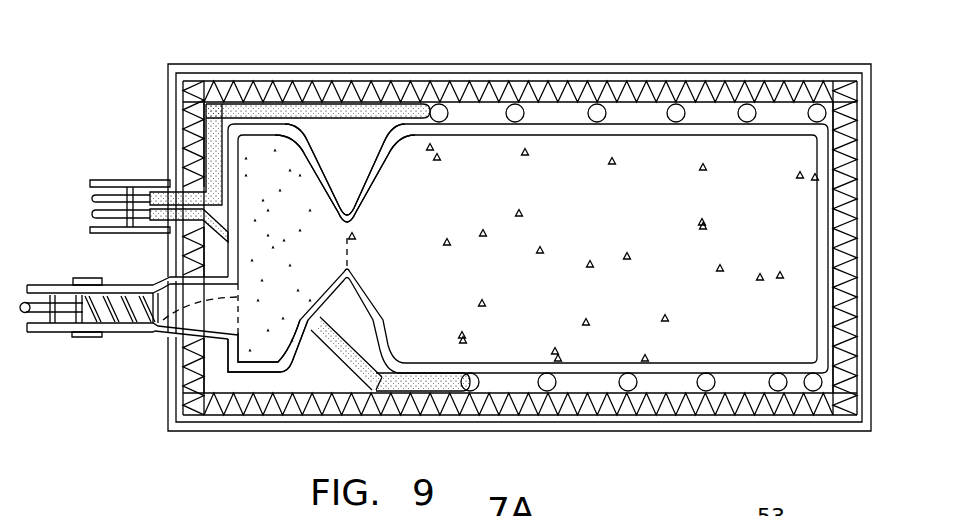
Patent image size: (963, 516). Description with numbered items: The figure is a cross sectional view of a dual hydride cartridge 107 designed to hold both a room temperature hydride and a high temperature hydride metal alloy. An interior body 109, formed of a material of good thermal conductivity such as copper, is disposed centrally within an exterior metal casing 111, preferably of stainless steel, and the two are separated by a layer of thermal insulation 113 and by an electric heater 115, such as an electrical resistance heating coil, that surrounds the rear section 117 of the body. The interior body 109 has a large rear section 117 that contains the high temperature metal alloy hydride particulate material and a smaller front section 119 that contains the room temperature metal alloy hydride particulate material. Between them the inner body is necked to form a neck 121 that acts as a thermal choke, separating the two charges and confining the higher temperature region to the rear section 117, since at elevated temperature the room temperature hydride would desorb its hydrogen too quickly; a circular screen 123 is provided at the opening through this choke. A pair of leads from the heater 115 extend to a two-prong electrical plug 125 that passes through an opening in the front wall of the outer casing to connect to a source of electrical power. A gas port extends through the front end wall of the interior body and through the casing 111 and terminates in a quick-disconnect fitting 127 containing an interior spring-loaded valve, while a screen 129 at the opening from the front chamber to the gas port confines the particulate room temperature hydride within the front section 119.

The dual hydride cartridge 107 is at (578, 43).
The interior body 109 is at (255, 130).
The exterior metal casing 111 is at (197, 67).
The layer of thermal insulation 113 is at (660, 97).
The electric heater 115 is at (438, 105).
The rear section 117 is at (663, 367).
The front section 119 is at (253, 365).
The neck 121 is at (330, 192).
The circular screen 123 is at (352, 243).
The 2-prong electrical plug 125 is at (118, 180).
The quick-disconnect fitting 127 is at (116, 331).
The screen 129 is at (153, 338).